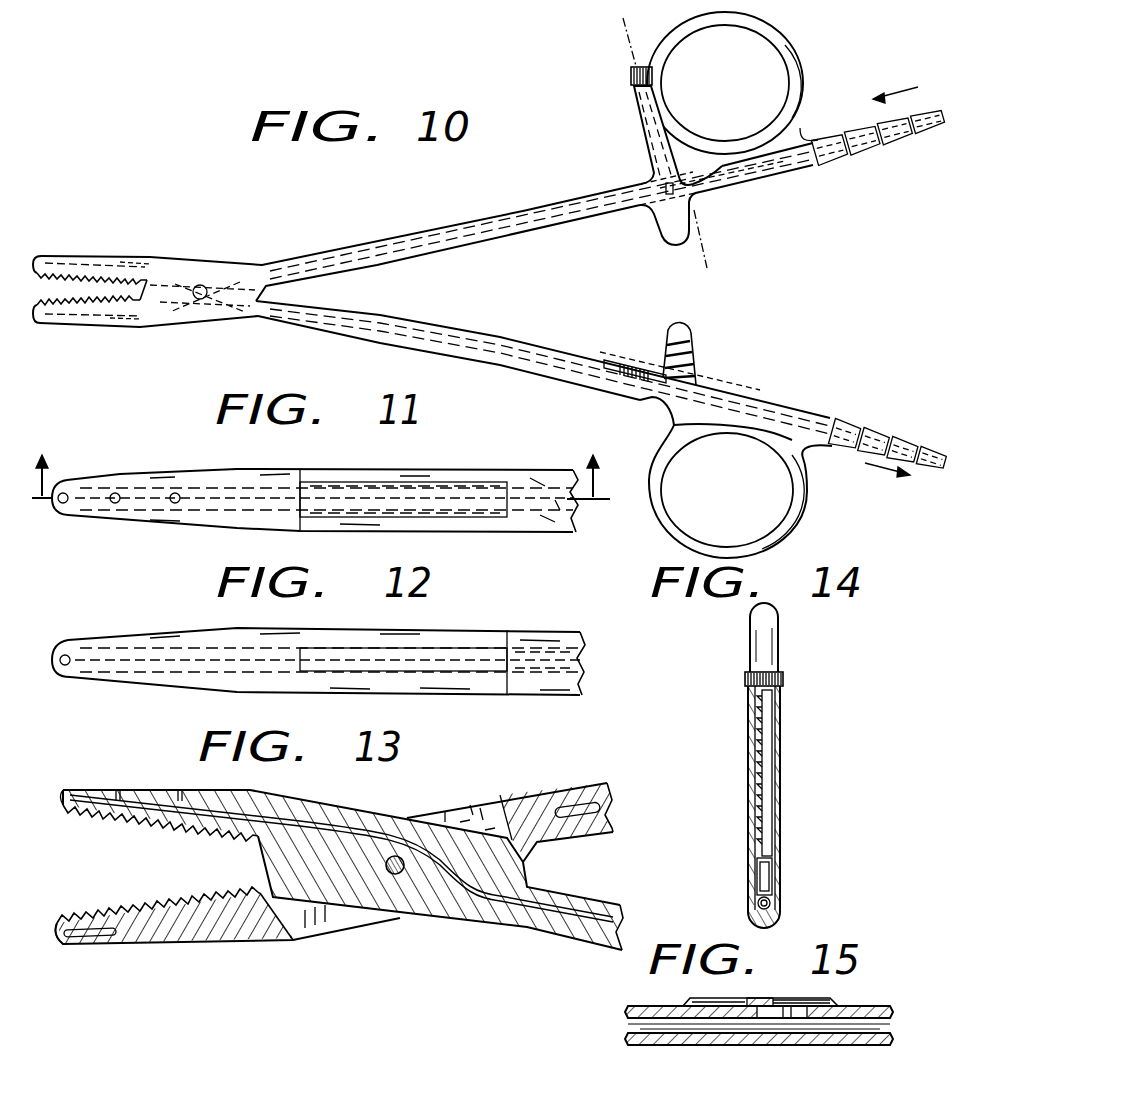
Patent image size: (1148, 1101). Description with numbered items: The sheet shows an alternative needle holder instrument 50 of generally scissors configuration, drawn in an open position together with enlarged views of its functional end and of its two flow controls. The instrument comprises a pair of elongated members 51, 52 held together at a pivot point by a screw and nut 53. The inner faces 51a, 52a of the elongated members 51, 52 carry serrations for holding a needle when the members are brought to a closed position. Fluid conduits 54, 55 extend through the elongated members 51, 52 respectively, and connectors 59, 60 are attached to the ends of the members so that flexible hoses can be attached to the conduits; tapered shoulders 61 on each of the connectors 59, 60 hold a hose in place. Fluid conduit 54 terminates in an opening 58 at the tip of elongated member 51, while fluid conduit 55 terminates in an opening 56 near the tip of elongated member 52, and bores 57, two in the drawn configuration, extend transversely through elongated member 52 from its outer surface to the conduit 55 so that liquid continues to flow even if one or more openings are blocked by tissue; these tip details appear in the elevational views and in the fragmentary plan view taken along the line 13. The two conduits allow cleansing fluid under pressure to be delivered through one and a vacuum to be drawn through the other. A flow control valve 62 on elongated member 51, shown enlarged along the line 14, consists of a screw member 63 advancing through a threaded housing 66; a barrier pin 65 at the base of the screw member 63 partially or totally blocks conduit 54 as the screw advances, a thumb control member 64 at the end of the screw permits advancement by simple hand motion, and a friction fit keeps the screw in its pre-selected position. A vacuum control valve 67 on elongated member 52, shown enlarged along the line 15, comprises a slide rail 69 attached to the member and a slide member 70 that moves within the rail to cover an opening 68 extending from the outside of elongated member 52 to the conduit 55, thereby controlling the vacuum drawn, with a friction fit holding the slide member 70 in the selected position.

In FIG. 10, the needle holder instrument 50 is at (420, 233).
In FIG. 10, the elongated member 51 is at (524, 214).
In FIG. 11, the elongated member 51 is at (532, 520).
In FIG. 12, the elongated member 51 is at (187, 645).
In FIG. 13, the elongated member 51 is at (521, 800).
In FIG. 14, the elongated member 51 is at (756, 911).
In FIG. 10, the inner face 51a is at (86, 297).
In FIG. 13, the inner face 51a is at (103, 920).
In FIG. 10, the elongated member 52 is at (331, 325).
In FIG. 11, the elongated member 52 is at (213, 481).
In FIG. 12, the elongated member 52 is at (559, 688).
In FIG. 13, the elongated member 52 is at (521, 933).
In FIG. 15, the elongated member 52 is at (662, 1046).
In FIG. 10, the inner face 52a is at (84, 276).
In FIG. 13, the inner face 52a is at (92, 812).
In FIG. 10, the screw and nut 53 is at (201, 284).
In FIG. 13, the screw and nut 53 is at (396, 876).
In FIG. 10, the fluid conduit 54 is at (136, 320).
In FIG. 11, the fluid conduit 54 is at (522, 481).
In FIG. 12, the fluid conduit 54 is at (165, 684).
In FIG. 13, the fluid conduit 54 is at (583, 803).
In FIG. 14, the fluid conduit 54 is at (771, 902).
In FIG. 10, the fluid conduit 55 is at (135, 262).
In FIG. 11, the fluid conduit 55 is at (213, 505).
In FIG. 12, the fluid conduit 55 is at (521, 650).
In FIG. 13, the fluid conduit 55 is at (296, 822).
In FIG. 15, the fluid conduit 55 is at (860, 1030).
In FIG. 11, the opening 56 is at (65, 505).
In FIG. 13, the opening 56 is at (64, 789).
In FIG. 11, the bores 57 is at (174, 493).
In FIG. 13, the bores 57 is at (180, 790).
In FIG. 12, the opening 58 is at (68, 657).
In FIG. 13, the opening 58 is at (59, 944).
In FIG. 10, the connector 59 is at (838, 125).
In FIG. 10, the connector 60 is at (866, 423).
In FIG. 10, the tapered shoulders 61 is at (898, 134).
In FIG. 10, the flow control valve 62 is at (644, 121).
In FIG. 14, the flow control valve 62 is at (784, 721).
In FIG. 14, the screw member 63 is at (772, 757).
In FIG. 14, the thumb control member 64 is at (784, 678).
In FIG. 14, the barrier pin 65 is at (758, 875).
In FIG. 14, the threaded housing 66 is at (782, 792).
In FIG. 10, the vacuum control valve 67 is at (631, 361).
In FIG. 15, the vacuum control valve 67 is at (684, 1002).
In FIG. 15, the opening 68 is at (786, 1020).
In FIG. 15, the slide rail 69 is at (808, 998).
In FIG. 15, the slide member 70 is at (752, 998).
In FIG. 11, the section line 13— 13 is at (319, 462).
In FIG. 10, the section line 14— 14 is at (628, 35).
In FIG. 10, the section line 15— 15 is at (580, 355).